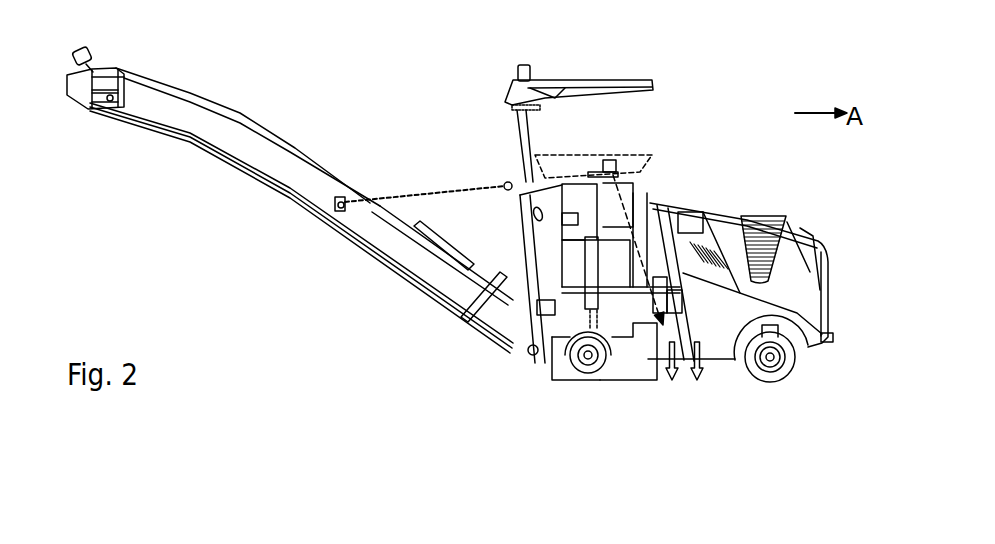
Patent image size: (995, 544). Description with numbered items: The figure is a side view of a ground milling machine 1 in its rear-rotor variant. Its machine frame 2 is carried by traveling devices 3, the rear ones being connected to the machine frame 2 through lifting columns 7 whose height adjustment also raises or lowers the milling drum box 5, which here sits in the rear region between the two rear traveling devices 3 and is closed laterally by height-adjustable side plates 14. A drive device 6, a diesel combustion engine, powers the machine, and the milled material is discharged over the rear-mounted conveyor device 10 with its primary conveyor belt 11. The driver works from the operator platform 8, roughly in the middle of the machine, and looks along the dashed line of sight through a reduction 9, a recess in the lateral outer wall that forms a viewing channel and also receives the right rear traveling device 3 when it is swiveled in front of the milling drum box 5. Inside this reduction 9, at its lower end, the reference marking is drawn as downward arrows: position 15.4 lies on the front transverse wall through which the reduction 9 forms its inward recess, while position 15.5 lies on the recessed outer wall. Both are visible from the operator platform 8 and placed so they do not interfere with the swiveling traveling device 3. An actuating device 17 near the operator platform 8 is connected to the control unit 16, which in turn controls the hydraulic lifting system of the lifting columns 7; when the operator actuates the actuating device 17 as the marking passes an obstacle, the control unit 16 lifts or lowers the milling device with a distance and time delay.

The ground milling machine 1 is at (454, 100).
The machine frame 2 is at (720, 260).
The traveling devices 3 is at (588, 357).
The milling drum box 5 is at (572, 326).
The drive device 6 is at (788, 287).
The lifting columns 7 is at (590, 290).
The operator platform 8 is at (606, 183).
The reduction 9 is at (652, 342).
The conveyor device 10 is at (462, 287).
The primary conveyor belt 11 is at (301, 228).
The side plates 14 is at (624, 372).
The reference marking position on transverse wall 15.4 is at (698, 381).
The reference marking position on recessed outer wall 15.5 is at (673, 381).
The control unit 16 is at (700, 213).
The actuating device 17 is at (616, 162).